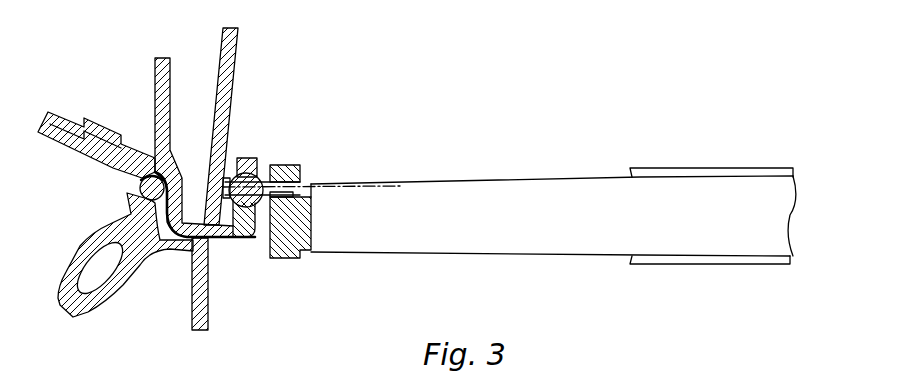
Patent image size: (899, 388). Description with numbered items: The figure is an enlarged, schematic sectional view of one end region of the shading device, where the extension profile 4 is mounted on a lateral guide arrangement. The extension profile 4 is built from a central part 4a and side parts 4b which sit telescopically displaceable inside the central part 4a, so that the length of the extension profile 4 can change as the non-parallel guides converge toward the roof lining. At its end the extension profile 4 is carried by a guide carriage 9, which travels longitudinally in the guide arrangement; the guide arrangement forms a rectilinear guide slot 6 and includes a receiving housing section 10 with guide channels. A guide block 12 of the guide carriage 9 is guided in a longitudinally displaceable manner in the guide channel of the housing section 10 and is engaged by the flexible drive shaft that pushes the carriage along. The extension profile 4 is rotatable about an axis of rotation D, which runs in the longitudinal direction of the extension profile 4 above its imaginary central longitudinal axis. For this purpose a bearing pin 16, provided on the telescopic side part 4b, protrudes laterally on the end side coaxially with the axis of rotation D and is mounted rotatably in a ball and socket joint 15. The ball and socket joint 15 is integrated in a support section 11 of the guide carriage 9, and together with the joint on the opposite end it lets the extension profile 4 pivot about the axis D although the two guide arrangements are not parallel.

The extension profile 4 is at (682, 266).
The central part 4a is at (702, 170).
The side part 4b is at (475, 203).
The guide slot 6 is at (219, 247).
The guide carriage 9 is at (240, 150).
The receiving housing section 10 is at (211, 148).
The support section 11 is at (256, 224).
The guide block 12 is at (133, 193).
The ball and socket joint 15 is at (262, 172).
The bearing pin 16 is at (272, 258).
The axis of rotation D is at (357, 187).